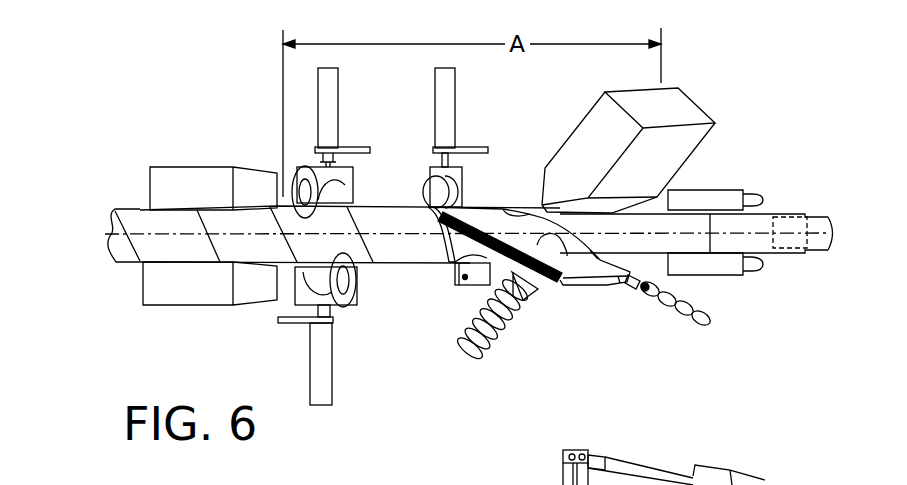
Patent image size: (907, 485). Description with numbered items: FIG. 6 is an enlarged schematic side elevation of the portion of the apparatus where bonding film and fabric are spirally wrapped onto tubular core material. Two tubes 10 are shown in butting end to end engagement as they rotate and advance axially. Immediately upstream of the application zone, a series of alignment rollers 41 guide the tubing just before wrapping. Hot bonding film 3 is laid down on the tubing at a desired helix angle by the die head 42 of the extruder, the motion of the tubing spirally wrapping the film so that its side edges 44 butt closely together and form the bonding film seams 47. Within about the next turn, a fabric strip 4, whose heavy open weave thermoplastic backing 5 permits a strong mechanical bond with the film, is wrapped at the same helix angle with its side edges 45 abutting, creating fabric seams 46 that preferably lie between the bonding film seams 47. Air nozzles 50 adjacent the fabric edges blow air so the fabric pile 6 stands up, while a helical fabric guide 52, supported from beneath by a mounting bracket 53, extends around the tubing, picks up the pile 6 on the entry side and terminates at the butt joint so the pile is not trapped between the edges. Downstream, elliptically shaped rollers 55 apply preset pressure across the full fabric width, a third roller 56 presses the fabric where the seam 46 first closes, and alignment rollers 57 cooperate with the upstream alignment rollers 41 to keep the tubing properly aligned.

The bonding film 3 is at (531, 207).
The fabric strip 4 is at (578, 284).
The thermoplastic backing 5 is at (618, 284).
The fabric pile 6 is at (558, 251).
The tube 10 is at (685, 218).
The alignment rollers 41 is at (727, 275).
The die head 42 is at (592, 122).
The side edges of the bonding film 44 is at (595, 258).
The side edges of the fabric strip 45 is at (363, 230).
The fabric seams 46 is at (373, 263).
The bonding film seams 47 is at (452, 270).
The air nozzles 50 is at (523, 296).
The helical fabric guide 52 is at (513, 210).
The mounting bracket 53 is at (482, 287).
The elliptically shaped rollers 55 is at (330, 187).
The third roller 56 is at (432, 190).
The alignment rollers 57 is at (217, 172).